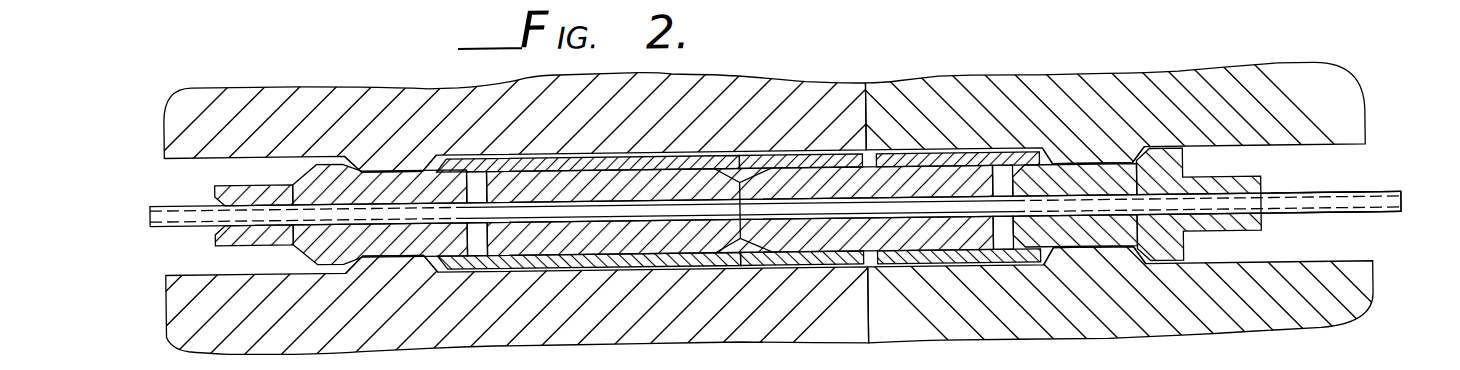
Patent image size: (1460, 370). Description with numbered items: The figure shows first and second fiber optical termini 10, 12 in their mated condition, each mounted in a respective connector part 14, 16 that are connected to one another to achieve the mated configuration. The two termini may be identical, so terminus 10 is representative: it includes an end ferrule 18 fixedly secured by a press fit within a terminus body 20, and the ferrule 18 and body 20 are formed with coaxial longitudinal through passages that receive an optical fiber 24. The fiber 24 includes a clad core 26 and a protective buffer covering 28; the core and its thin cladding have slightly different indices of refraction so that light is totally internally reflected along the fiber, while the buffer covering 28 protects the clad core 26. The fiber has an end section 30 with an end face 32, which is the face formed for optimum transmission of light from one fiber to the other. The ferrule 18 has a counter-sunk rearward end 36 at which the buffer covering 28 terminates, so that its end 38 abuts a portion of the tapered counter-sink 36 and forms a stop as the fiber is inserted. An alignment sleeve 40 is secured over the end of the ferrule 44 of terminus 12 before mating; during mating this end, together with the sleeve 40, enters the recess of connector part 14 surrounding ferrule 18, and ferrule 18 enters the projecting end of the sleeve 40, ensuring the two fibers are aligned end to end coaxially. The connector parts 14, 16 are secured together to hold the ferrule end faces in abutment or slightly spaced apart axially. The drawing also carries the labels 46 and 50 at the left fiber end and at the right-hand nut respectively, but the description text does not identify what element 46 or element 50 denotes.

The first fiber optical terminus 10 is at (1047, 141).
The second fiber optical terminus 12 is at (437, 136).
The connector part 14 is at (1148, 74).
The connector part 16 is at (362, 82).
The end ferrule 18 is at (812, 167).
The terminus body 20 is at (1080, 173).
The optical fiber 24 is at (1348, 195).
The clad core 26 is at (1382, 221).
The buffer covering 28 is at (1390, 196).
The end section 30 is at (823, 212).
The end face 32 is at (733, 216).
The counter-sunk rearward end 36 is at (977, 190).
The end of buffer covering 38 is at (950, 225).
The alignment sleeve 40 is at (640, 155).
The ferrule 44 is at (680, 172).
The gland 46 is at (152, 205).
The outer nut 50 is at (1220, 192).